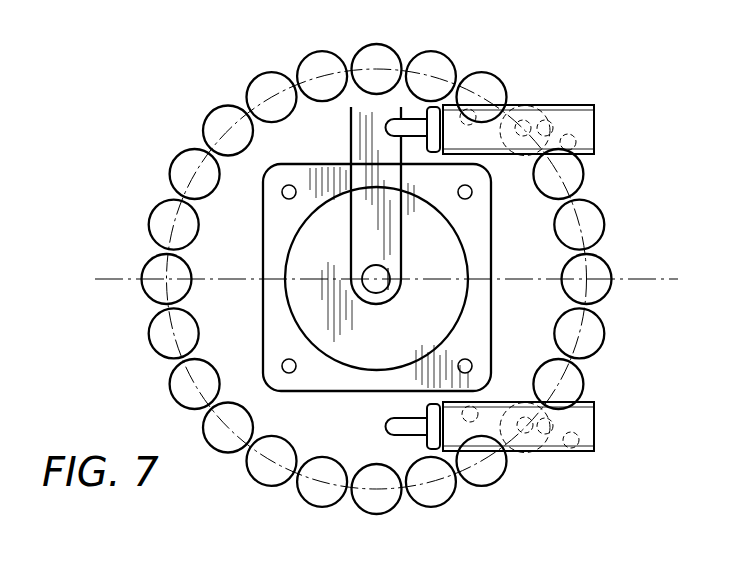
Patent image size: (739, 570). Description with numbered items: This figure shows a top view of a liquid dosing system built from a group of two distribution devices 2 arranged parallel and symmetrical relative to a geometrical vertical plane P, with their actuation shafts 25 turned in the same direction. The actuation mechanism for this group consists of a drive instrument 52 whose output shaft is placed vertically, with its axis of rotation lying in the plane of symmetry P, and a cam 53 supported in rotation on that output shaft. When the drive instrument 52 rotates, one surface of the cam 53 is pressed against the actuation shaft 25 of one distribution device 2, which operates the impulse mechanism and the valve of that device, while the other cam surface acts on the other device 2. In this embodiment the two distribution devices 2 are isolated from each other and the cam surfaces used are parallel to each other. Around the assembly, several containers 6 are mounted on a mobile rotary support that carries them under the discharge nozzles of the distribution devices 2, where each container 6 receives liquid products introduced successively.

The distribution device 2 is at (588, 133).
The container 6 is at (220, 127).
The actuation shaft 25 is at (408, 120).
The drive instrument 52 is at (290, 310).
The cam 53 is at (360, 155).
The geometrical vertical plane P is at (386, 264).